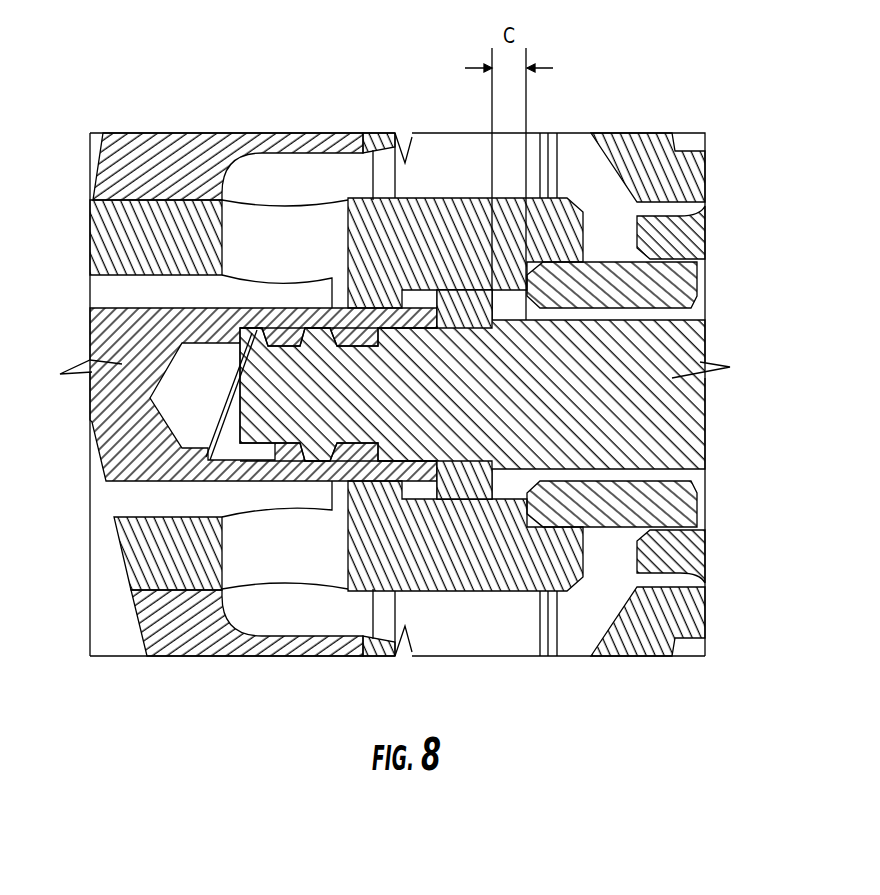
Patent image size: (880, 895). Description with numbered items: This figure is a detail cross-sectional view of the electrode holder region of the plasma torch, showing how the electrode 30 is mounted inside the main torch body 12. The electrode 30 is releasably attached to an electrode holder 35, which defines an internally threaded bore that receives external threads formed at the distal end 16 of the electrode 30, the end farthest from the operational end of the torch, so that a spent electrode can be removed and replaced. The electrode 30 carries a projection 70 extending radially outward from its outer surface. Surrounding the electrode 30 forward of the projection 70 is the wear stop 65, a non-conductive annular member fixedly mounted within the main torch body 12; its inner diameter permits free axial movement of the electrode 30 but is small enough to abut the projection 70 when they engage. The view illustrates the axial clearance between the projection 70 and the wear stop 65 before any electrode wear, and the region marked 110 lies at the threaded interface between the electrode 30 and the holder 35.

The main torch body 12 is at (110, 232).
The distal end of the electrode 16 is at (268, 412).
The electrode 30 is at (692, 352).
The electrode holder 35 is at (114, 422).
The wear stop 65 is at (578, 278).
The projection 70 is at (458, 320).
The threaded connection region 110 is at (412, 300).